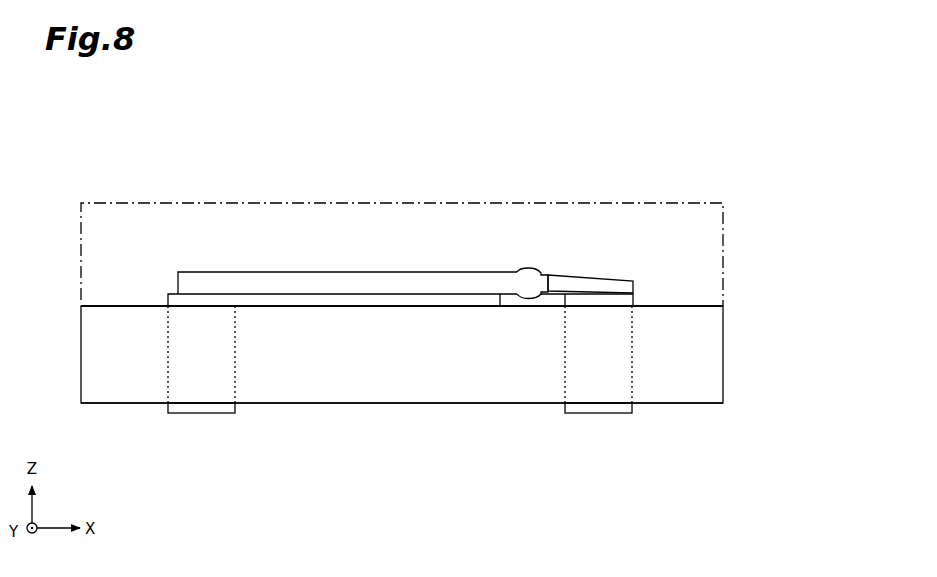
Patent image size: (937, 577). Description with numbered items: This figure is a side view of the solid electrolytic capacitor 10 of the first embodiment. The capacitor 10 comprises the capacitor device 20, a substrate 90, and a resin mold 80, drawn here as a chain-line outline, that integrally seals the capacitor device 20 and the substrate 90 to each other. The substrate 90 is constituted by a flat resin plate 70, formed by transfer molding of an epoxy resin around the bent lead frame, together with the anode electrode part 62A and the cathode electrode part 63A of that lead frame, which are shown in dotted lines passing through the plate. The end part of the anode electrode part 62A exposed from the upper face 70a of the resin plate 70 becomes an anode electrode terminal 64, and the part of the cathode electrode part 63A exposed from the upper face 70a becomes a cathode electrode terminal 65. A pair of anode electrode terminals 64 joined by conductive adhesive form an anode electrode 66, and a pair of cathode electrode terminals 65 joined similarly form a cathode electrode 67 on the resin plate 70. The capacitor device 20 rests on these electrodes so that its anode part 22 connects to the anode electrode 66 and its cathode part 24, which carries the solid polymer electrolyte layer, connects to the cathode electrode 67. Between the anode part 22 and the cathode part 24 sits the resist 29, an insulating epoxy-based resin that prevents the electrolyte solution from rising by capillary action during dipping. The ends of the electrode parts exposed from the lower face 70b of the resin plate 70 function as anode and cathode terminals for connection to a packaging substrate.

The solid electrolytic capacitor 10 is at (712, 116).
The capacitor device 20 is at (452, 270).
The anode part 22 is at (612, 278).
The cathode part 24 is at (378, 272).
The resist 29 is at (545, 275).
The anode electrode part 62A is at (563, 354).
The cathode electrode part 63A is at (237, 354).
The anode electrode terminal 64 is at (636, 300).
The cathode electrode terminal 65 is at (166, 295).
The anode electrode 66 is at (631, 285).
The cathode electrode 67 is at (304, 281).
The resin plate 70 is at (723, 362).
The upper face of the resin plate 70a is at (106, 306).
The lower face of the resin plate 70b is at (103, 403).
The resin mold 80 is at (727, 247).
The substrate 90 is at (726, 306).